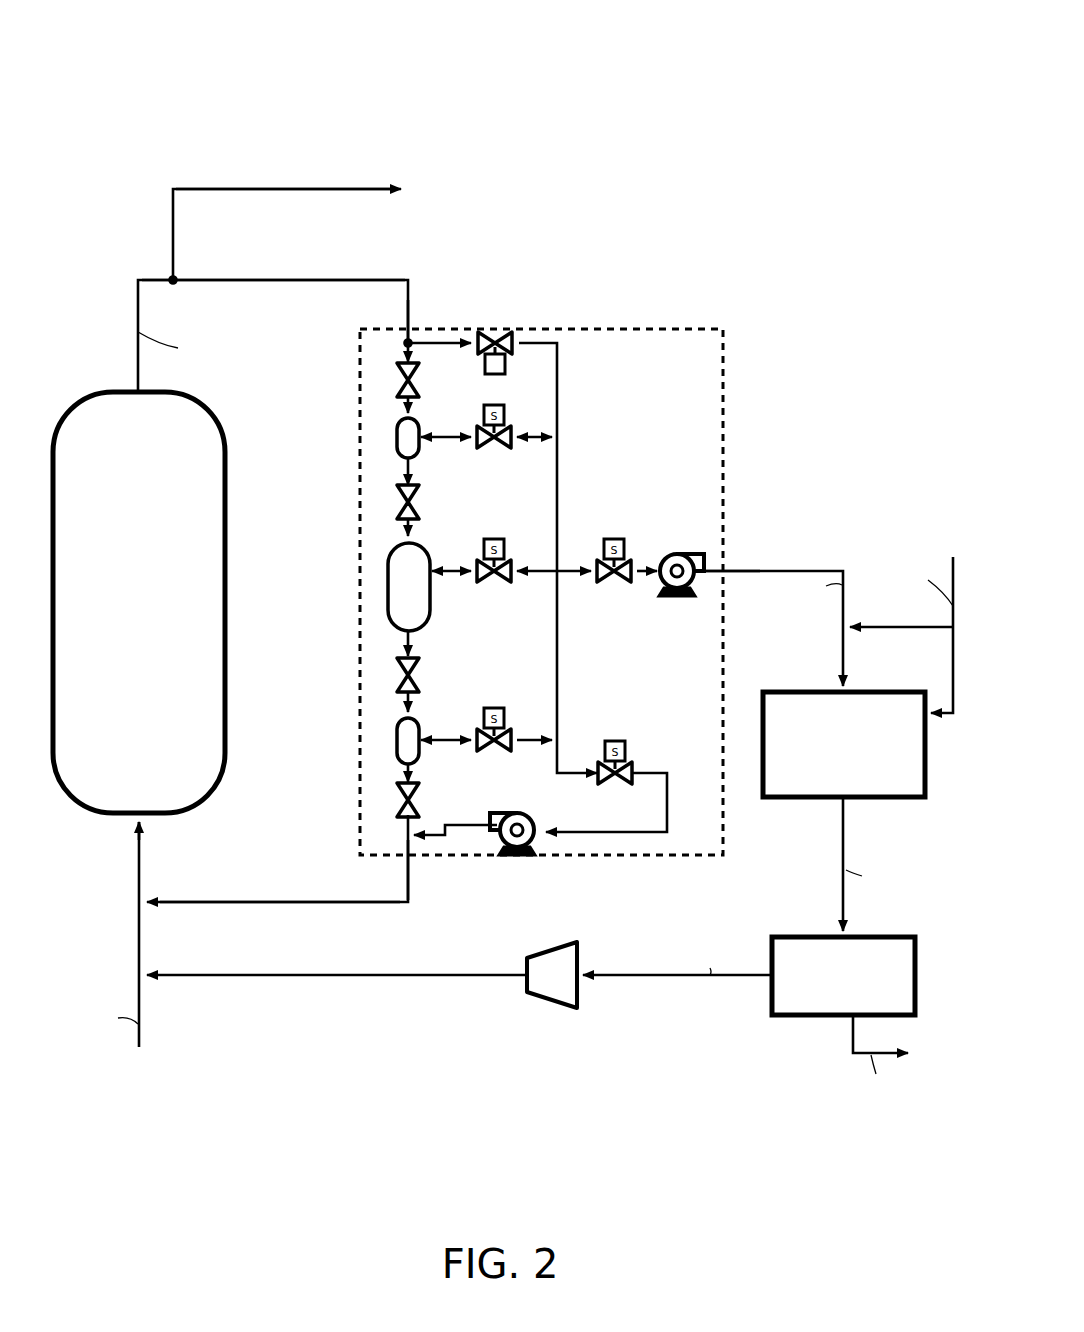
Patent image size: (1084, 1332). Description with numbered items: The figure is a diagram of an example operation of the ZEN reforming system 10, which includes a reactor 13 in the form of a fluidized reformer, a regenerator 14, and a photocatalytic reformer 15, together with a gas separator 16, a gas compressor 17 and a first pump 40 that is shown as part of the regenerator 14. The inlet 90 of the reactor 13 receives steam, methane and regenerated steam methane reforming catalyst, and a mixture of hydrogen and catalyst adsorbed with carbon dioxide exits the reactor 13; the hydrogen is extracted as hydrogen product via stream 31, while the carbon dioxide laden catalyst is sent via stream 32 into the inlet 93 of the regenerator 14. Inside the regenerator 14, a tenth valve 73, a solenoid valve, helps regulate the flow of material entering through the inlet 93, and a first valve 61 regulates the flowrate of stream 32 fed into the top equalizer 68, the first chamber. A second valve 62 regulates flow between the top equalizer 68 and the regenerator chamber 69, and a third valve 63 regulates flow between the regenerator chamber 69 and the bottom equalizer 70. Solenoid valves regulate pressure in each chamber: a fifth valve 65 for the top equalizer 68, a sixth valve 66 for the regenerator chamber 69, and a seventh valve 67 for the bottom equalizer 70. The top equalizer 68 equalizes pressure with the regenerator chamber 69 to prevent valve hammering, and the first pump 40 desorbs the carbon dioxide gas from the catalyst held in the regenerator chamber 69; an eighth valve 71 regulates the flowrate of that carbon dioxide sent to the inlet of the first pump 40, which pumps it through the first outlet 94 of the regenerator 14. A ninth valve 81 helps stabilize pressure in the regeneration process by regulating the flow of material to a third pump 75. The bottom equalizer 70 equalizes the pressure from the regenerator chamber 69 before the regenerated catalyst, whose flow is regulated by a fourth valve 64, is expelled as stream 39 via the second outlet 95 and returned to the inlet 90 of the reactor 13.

The ZEN reforming system 10 is at (826, 108).
The reactor 13 is at (139, 602).
The regenerator 14 is at (725, 429).
The photocatalytic reformer 15 is at (844, 744).
The gas separator 16 is at (843, 976).
The gas compressor 17 is at (527, 991).
The stream 31 is at (238, 188).
The stream 32 is at (280, 279).
The stream 39 is at (229, 901).
The first pump 40 is at (674, 554).
The first valve 61 is at (422, 380).
The second valve 62 is at (422, 502).
The third valve 63 is at (422, 675).
The fourth valve 64 is at (422, 800).
The fifth valve 65 is at (503, 416).
The sixth valve 66 is at (494, 540).
The seventh valve 67 is at (494, 708).
The top equalizer 68 is at (420, 430).
The regenerator chamber 69 is at (420, 548).
The bottom equalizer 70 is at (420, 730).
The eighth valve 71 is at (614, 540).
The tenth valve 73 is at (503, 368).
The third pump 75 is at (516, 812).
The ninth valve 81 is at (615, 741).
The inlet 90 is at (135, 817).
The inlet 93 is at (414, 325).
The first outlet 94 is at (724, 565).
The second outlet 95 is at (413, 862).